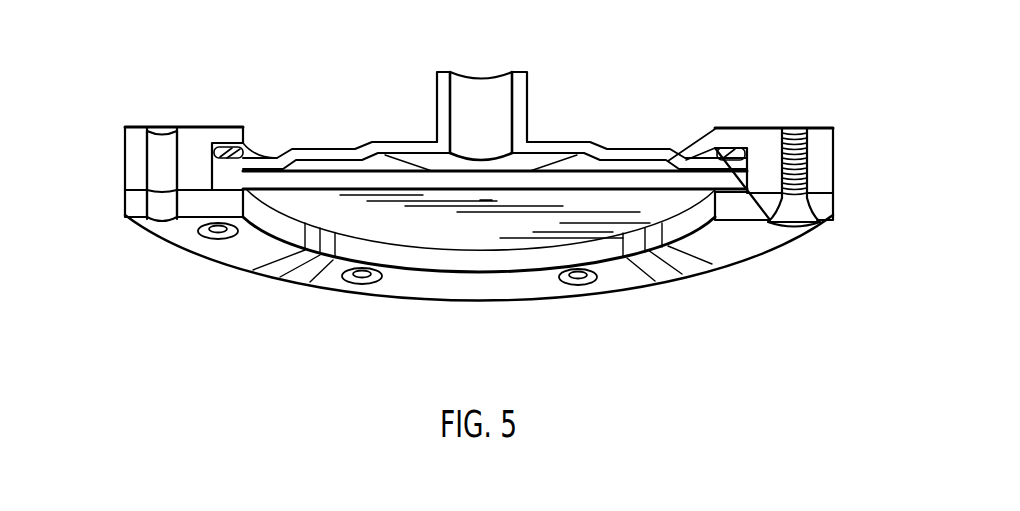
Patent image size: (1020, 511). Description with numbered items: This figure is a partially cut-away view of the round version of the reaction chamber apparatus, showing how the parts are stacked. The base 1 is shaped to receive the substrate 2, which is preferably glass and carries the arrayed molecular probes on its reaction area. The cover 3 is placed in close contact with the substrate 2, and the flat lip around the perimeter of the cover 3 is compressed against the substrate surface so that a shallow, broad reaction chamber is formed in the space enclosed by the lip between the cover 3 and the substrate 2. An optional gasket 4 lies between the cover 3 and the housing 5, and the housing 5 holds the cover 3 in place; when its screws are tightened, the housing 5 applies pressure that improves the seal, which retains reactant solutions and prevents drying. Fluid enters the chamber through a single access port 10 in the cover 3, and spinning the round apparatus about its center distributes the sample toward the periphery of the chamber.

The base 1 is at (243, 248).
The substrate 2 is at (476, 207).
The cover 3 is at (365, 140).
The gasket 4 is at (733, 152).
The housing 5 is at (198, 126).
The access port 10 is at (480, 117).